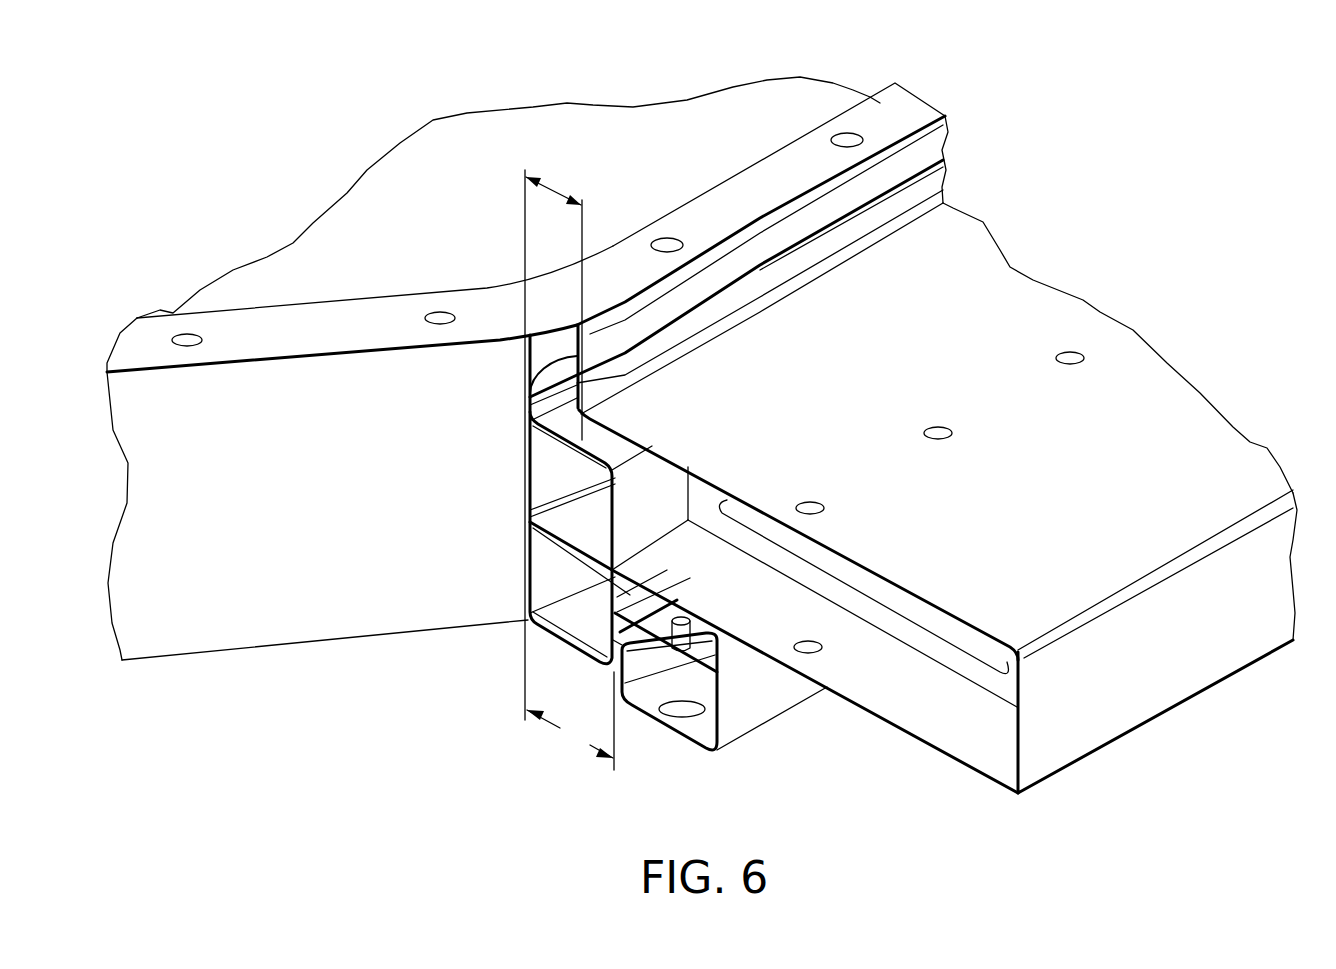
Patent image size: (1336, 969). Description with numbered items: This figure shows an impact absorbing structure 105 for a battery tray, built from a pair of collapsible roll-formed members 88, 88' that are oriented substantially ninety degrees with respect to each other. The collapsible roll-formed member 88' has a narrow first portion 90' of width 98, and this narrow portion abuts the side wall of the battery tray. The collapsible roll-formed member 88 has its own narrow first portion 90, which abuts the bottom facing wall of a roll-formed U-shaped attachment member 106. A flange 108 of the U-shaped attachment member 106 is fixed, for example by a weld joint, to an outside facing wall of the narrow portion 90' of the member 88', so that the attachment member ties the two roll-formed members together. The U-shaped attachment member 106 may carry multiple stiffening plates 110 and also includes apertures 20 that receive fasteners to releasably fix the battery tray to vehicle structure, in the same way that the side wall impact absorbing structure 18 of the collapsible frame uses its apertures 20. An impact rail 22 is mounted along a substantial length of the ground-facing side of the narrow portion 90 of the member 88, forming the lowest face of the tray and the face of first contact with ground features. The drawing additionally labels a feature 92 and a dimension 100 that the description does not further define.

The side wall impact absorbing structure 18 is at (897, 107).
The apertures 20 is at (1070, 352).
The impact rail 22 is at (693, 740).
The collapsible roll-formed member 88 is at (342, 526).
The collapsible roll-formed member 88' is at (493, 224).
The narrow first portion 90 is at (662, 709).
The narrow first portion 90' is at (523, 372).
The lower channel portion 92 is at (582, 653).
The width 98 is at (526, 177).
The offset dimension 100 is at (570, 721).
The impact absorbing structure 105 is at (800, 748).
The roll-formed U-shaped attachment member 106 is at (873, 580).
The flange 108 is at (930, 184).
The stiffening plates 110 is at (787, 555).